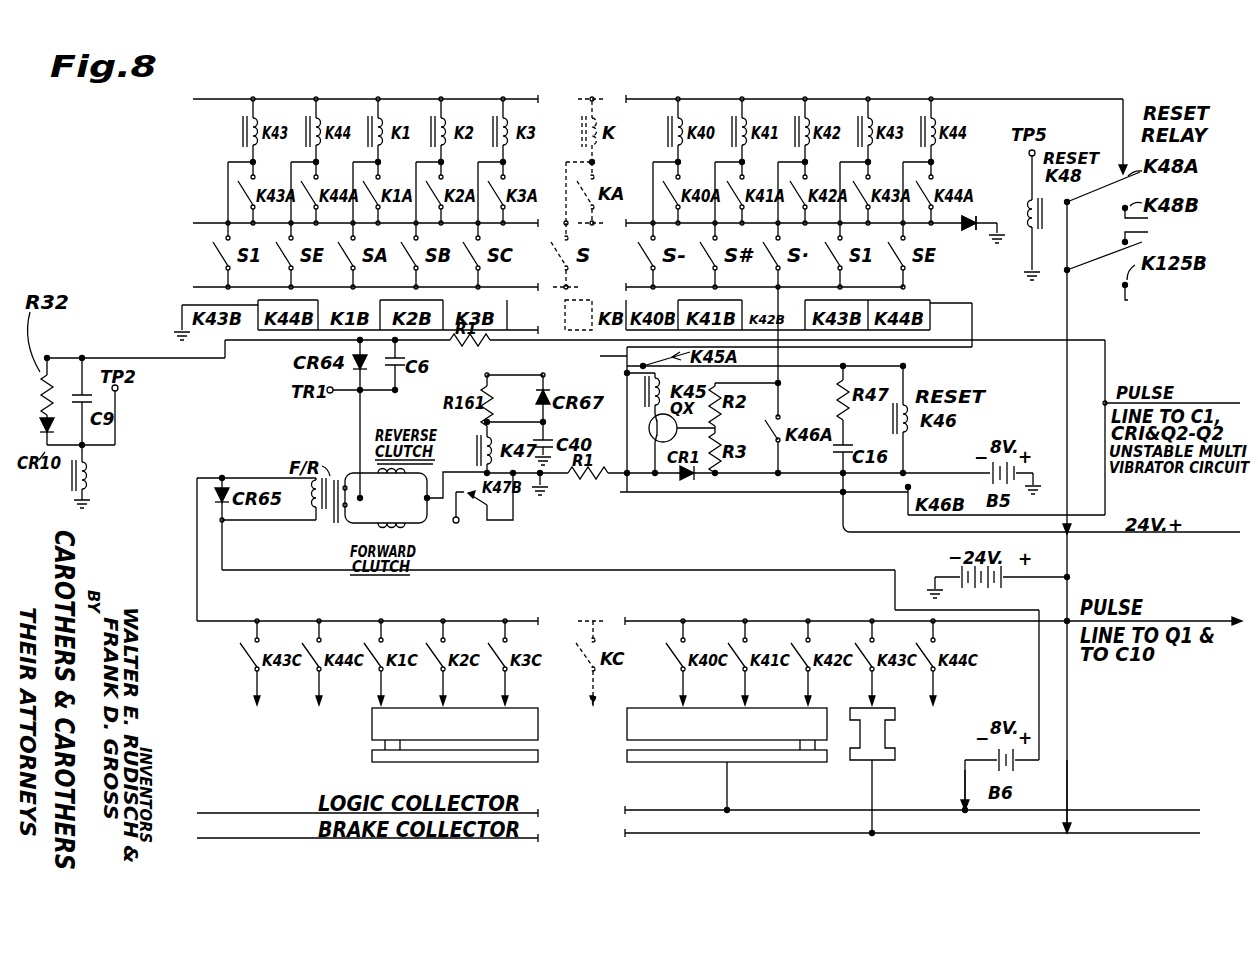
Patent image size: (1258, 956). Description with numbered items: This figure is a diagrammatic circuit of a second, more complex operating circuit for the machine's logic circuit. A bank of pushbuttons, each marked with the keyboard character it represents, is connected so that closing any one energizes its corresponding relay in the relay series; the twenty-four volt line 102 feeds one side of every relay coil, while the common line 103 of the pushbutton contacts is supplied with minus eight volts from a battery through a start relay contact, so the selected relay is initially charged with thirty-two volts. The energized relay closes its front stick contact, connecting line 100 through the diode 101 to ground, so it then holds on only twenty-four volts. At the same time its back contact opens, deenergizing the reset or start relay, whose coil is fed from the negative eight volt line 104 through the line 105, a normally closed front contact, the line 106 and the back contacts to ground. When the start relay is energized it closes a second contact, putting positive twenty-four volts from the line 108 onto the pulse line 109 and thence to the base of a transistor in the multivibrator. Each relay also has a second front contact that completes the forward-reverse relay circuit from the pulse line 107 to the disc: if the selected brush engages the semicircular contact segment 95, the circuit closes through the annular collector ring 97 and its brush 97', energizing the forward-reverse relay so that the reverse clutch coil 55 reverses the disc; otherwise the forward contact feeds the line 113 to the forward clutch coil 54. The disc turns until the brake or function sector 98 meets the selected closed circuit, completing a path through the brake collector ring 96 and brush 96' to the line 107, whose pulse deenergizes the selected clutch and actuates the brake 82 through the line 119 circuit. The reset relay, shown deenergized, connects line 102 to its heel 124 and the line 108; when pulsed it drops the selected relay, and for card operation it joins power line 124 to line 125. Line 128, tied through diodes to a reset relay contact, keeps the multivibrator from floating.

The forward clutch assembly operating coil 54 is at (374, 503).
The reverse clutch actuating coil 55 is at (442, 486).
The brake 82 is at (89, 476).
The semicircular contact segment 95 is at (627, 730).
The brake collector ring 96 is at (698, 816).
The annular collector ring 97 is at (698, 789).
The brake or function sector 98 is at (875, 712).
The brush 96' is at (1096, 795).
The brush 97' is at (941, 789).
The line 100 is at (213, 220).
The diode 101 is at (973, 214).
The 24 volt line 102 is at (253, 99).
The line 103 is at (906, 284).
The line 104 is at (905, 472).
The line 105 is at (905, 368).
The line 106 is at (976, 296).
The pulse line 107 is at (255, 621).
The 24 volt line 108 is at (622, 492).
The pulse line 109 is at (47, 358).
The line 113 is at (346, 530).
The line 119 is at (222, 572).
The heel 124 is at (1072, 207).
The power line 125 is at (1130, 298).
The line 128 is at (474, 513).